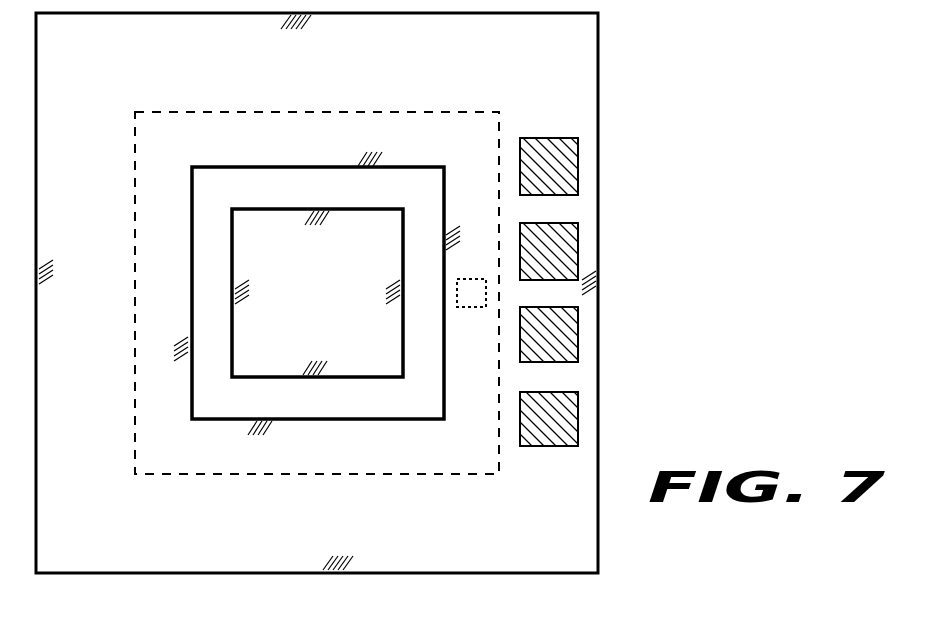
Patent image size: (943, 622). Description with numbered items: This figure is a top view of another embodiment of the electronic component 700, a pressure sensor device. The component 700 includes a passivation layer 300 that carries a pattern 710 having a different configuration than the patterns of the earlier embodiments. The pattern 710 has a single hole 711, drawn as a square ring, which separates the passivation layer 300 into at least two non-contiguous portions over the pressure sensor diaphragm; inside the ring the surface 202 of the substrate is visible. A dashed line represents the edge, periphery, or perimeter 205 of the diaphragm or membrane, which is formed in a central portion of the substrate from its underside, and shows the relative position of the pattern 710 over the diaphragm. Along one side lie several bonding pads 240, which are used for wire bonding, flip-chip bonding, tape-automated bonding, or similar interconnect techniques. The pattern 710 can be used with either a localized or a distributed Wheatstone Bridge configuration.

The electronic component 700 is at (388, 293).
The passivation layer 300 is at (122, 538).
The pattern 710 is at (413, 454).
The hole 711 is at (432, 166).
The surface 202 is at (317, 293).
The perimeter of diaphragm 205 is at (281, 110).
The bonding pads 240 is at (549, 454).